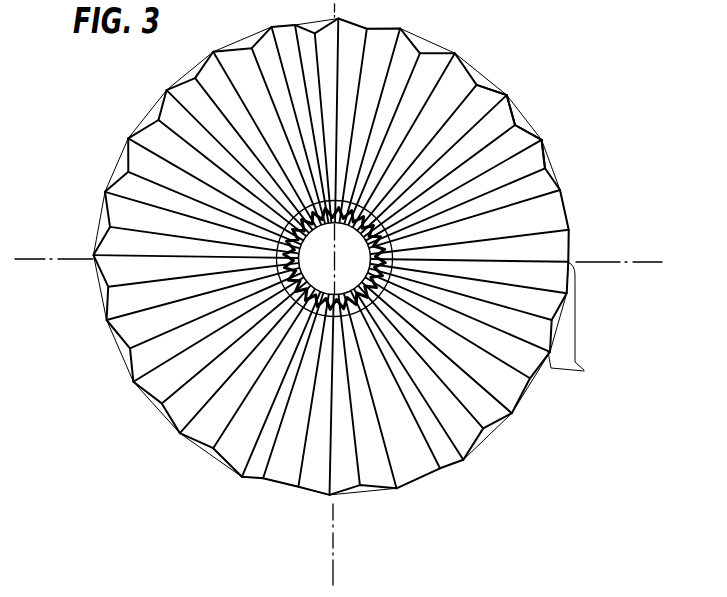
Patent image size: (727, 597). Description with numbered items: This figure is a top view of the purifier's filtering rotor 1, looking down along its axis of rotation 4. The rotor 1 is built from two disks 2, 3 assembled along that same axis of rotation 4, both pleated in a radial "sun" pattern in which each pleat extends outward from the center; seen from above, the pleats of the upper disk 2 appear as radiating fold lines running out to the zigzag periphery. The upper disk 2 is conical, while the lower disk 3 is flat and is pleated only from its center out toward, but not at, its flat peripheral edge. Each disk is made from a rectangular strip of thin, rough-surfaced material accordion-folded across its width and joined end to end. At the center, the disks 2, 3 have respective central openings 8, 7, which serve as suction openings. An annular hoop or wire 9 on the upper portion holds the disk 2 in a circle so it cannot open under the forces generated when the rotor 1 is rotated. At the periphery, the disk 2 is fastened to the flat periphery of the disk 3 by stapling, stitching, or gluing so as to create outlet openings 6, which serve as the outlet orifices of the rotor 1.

The filtering rotor 1 is at (540, 427).
The disk 2 is at (480, 108).
The disk 3 is at (563, 187).
The axis of rotation 4 is at (327, 516).
The outlet openings 6 is at (576, 325).
The central opening 7 is at (362, 262).
The central opening 8 is at (318, 284).
The annular hoop or wire 9 is at (515, 135).